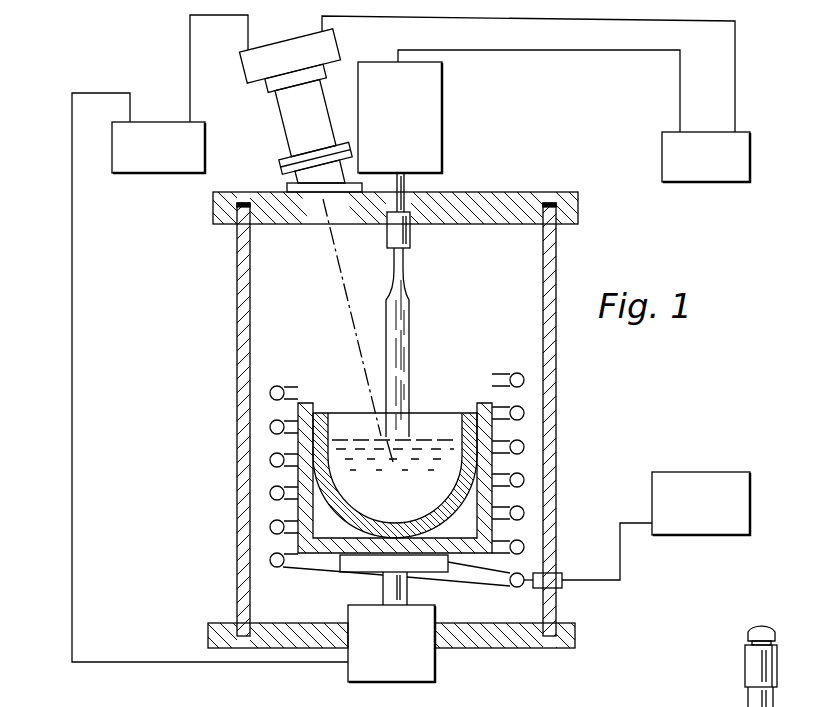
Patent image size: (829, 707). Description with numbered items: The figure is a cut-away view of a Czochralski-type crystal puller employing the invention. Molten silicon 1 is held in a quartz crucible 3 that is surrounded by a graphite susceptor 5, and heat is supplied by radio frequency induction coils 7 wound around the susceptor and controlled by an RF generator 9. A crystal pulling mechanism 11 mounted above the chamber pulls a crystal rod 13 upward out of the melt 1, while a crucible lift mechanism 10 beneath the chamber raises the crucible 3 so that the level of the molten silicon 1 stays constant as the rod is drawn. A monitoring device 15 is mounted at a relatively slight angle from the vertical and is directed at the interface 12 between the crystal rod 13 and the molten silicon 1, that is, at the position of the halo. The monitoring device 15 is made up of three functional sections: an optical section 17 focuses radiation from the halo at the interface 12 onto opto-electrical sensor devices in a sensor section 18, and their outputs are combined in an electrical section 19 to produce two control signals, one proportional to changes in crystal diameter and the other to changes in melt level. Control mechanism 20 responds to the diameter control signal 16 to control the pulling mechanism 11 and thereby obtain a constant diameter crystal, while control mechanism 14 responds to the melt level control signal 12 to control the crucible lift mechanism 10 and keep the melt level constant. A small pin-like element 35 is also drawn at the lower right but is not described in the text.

The molten silicon 1 is at (433, 443).
The quartz crucible 3 is at (318, 412).
The graphite susceptor 5 is at (308, 548).
The radio frequency induction coils 7 is at (512, 408).
The RF generator 9 is at (716, 472).
The crucible lift mechanism 10 is at (435, 658).
The crystal pulling mechanism 11 is at (430, 147).
The interface / melt level control signal 12 is at (189, 55).
The crystal rod 13 is at (404, 327).
The control mechanism 14 is at (165, 200).
The monitoring device 15 is at (234, 73).
The diameter control signal 16 is at (735, 97).
The optical section 17 is at (292, 142).
The sensor section 18 is at (268, 110).
The electrical section 19 is at (254, 86).
The control mechanism 20 is at (717, 173).
The pin 35 is at (748, 671).